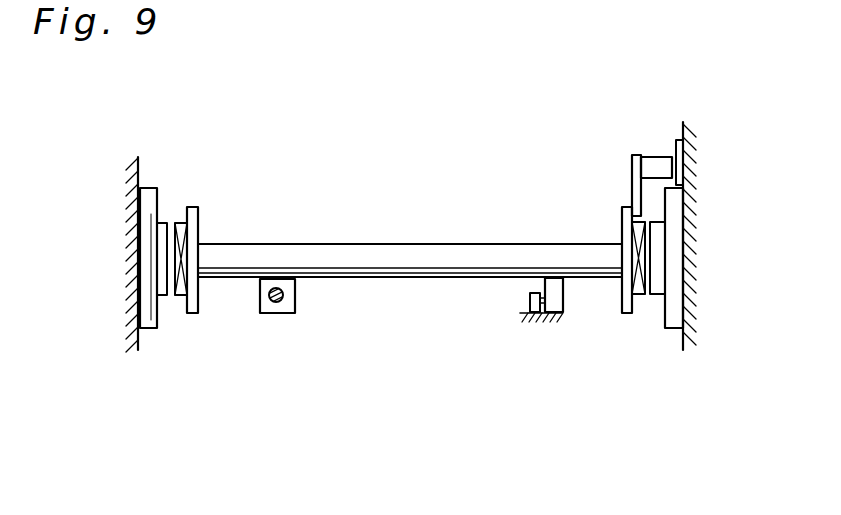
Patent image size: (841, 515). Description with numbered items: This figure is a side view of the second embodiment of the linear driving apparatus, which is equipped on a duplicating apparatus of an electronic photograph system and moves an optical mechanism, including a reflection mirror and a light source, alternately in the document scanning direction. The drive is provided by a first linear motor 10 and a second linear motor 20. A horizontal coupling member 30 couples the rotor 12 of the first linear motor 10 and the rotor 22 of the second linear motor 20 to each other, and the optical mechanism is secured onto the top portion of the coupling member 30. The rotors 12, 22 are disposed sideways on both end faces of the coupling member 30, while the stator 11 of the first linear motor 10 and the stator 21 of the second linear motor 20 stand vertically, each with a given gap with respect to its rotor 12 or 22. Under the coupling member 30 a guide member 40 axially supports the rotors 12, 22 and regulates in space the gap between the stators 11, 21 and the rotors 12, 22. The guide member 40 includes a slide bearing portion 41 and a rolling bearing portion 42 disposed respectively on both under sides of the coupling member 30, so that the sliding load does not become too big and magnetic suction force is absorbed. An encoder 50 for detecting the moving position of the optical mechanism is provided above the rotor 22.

The linear motor 10 is at (184, 183).
The stator 11 is at (145, 328).
The rotor 12 is at (192, 313).
The linear motor 20 is at (608, 193).
The stator 21 is at (673, 328).
The rotor 22 is at (641, 295).
The coupling member 30 is at (328, 243).
The guide member 40 is at (308, 303).
The slide bearing portion 41 is at (257, 313).
The rolling bearing portion 42 is at (565, 294).
The encoder 50 is at (650, 155).